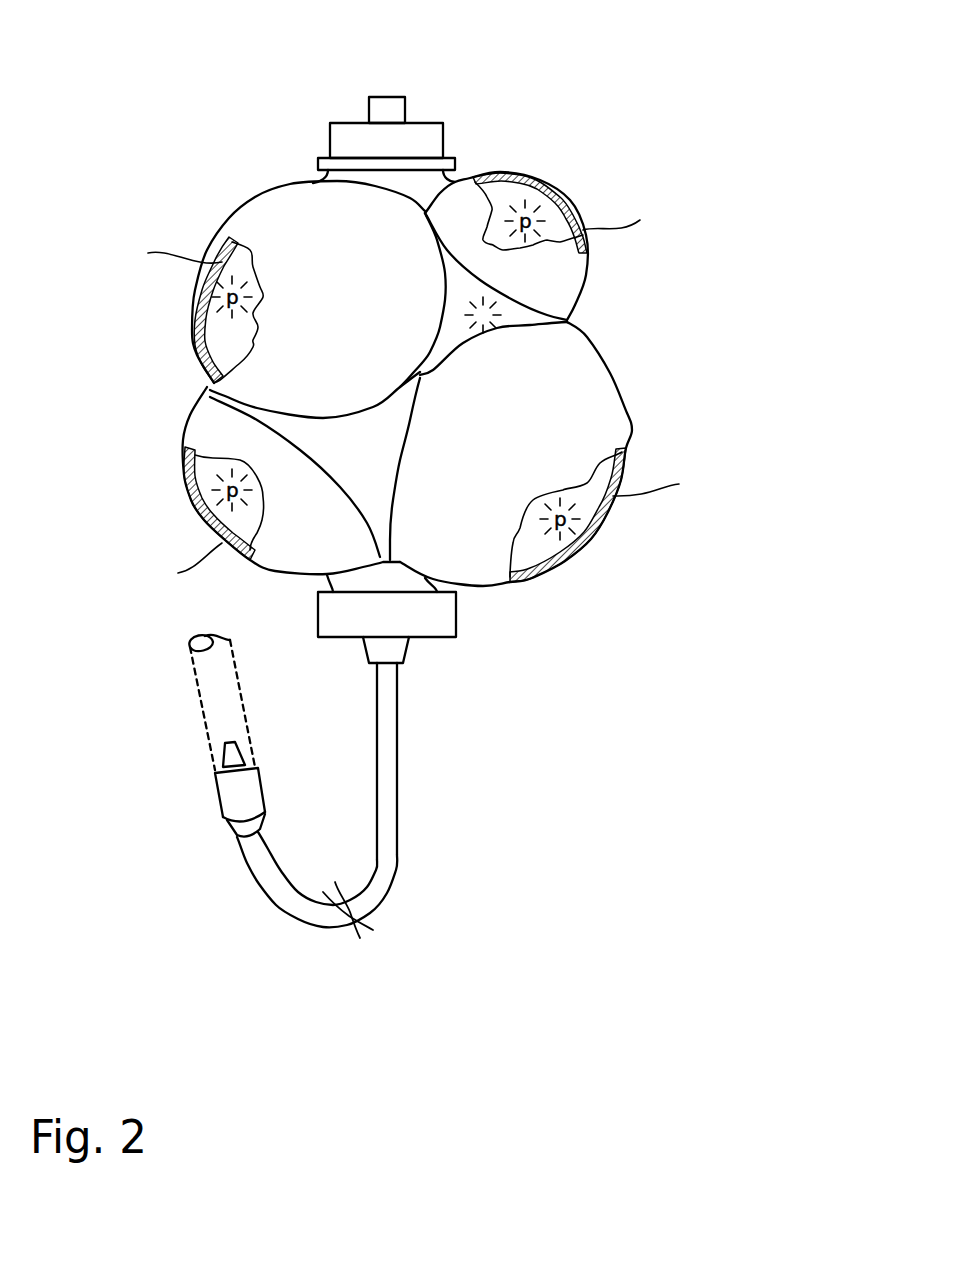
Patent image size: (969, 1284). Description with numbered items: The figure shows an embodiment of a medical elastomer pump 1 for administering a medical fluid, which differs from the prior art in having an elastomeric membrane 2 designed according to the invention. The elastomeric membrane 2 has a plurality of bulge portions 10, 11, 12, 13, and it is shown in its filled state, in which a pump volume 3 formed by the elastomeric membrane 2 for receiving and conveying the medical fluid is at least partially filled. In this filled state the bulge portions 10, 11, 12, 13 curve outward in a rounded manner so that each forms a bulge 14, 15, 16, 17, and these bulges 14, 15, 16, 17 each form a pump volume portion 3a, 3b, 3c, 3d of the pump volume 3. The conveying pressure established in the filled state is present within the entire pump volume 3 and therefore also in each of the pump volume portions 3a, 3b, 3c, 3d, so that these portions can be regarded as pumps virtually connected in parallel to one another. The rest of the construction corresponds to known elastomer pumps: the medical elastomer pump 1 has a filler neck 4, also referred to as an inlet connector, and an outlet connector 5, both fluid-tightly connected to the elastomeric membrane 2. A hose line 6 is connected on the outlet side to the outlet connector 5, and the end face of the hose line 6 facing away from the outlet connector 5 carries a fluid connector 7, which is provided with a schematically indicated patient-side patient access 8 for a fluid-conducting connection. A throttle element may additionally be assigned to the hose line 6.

The medical elastomer pump 1 is at (158, 80).
The elastomeric membrane 2 is at (633, 268).
The pump volume 3 is at (497, 325).
The pump volume portion 3a is at (508, 200).
The pump volume portion 3b is at (540, 553).
The pump volume portion 3c is at (188, 453).
The pump volume portion 3d is at (220, 352).
The filler neck 4 is at (337, 106).
The outlet connector 5 is at (461, 648).
The hose line 6 is at (400, 857).
The fluid connector 7 is at (228, 797).
The patient access 8 is at (200, 708).
The bulge portion 10 is at (457, 208).
The bulge portion 11 is at (607, 430).
The bulge portion 12 is at (285, 550).
The bulge portion 13 is at (282, 213).
The bulge 14 is at (551, 159).
The bulge 15 is at (621, 540).
The bulge 16 is at (176, 507).
The bulge 17 is at (211, 216).